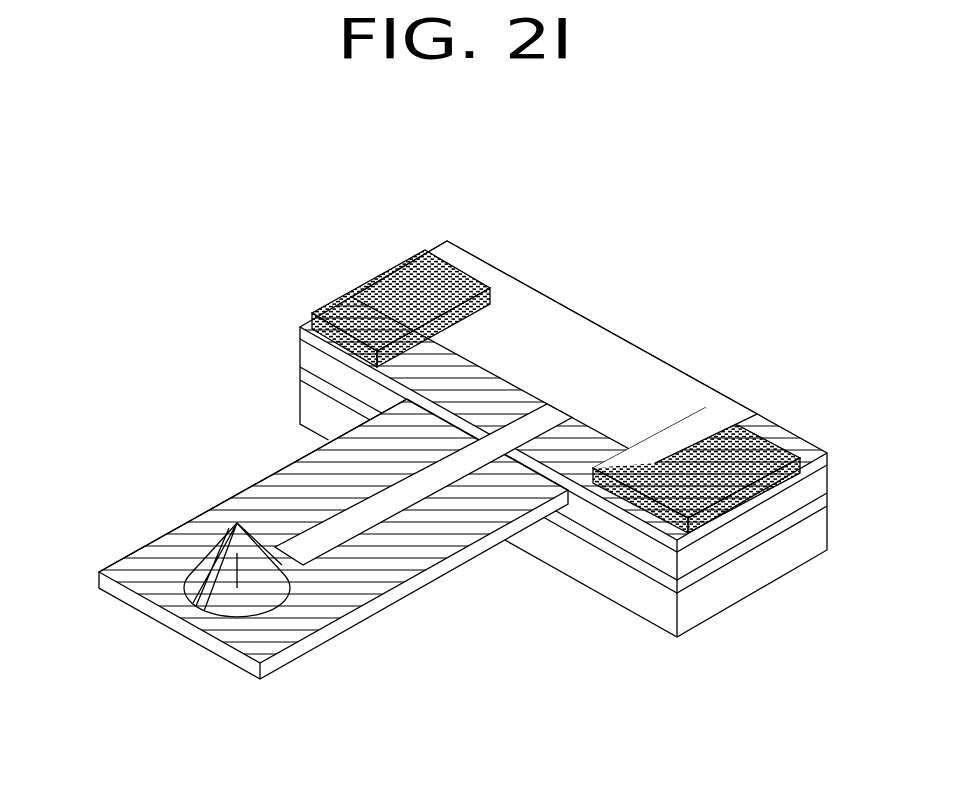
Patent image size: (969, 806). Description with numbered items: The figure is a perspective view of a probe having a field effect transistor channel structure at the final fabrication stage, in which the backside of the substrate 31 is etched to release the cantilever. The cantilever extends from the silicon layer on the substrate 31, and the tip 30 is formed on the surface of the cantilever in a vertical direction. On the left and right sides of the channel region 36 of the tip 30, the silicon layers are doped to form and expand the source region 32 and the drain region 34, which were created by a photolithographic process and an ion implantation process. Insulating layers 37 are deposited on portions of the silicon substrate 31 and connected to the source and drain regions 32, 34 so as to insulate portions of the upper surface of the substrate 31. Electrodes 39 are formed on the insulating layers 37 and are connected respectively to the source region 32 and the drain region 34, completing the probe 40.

The tip 30 is at (210, 533).
The substrate 31 is at (832, 462).
The source region 32 is at (120, 563).
The drain region 34 is at (303, 616).
The channel region 36 is at (127, 570).
The insulating layer 37 is at (507, 287).
The electrode 39 is at (356, 300).
The semiconductor probe 40 is at (486, 614).